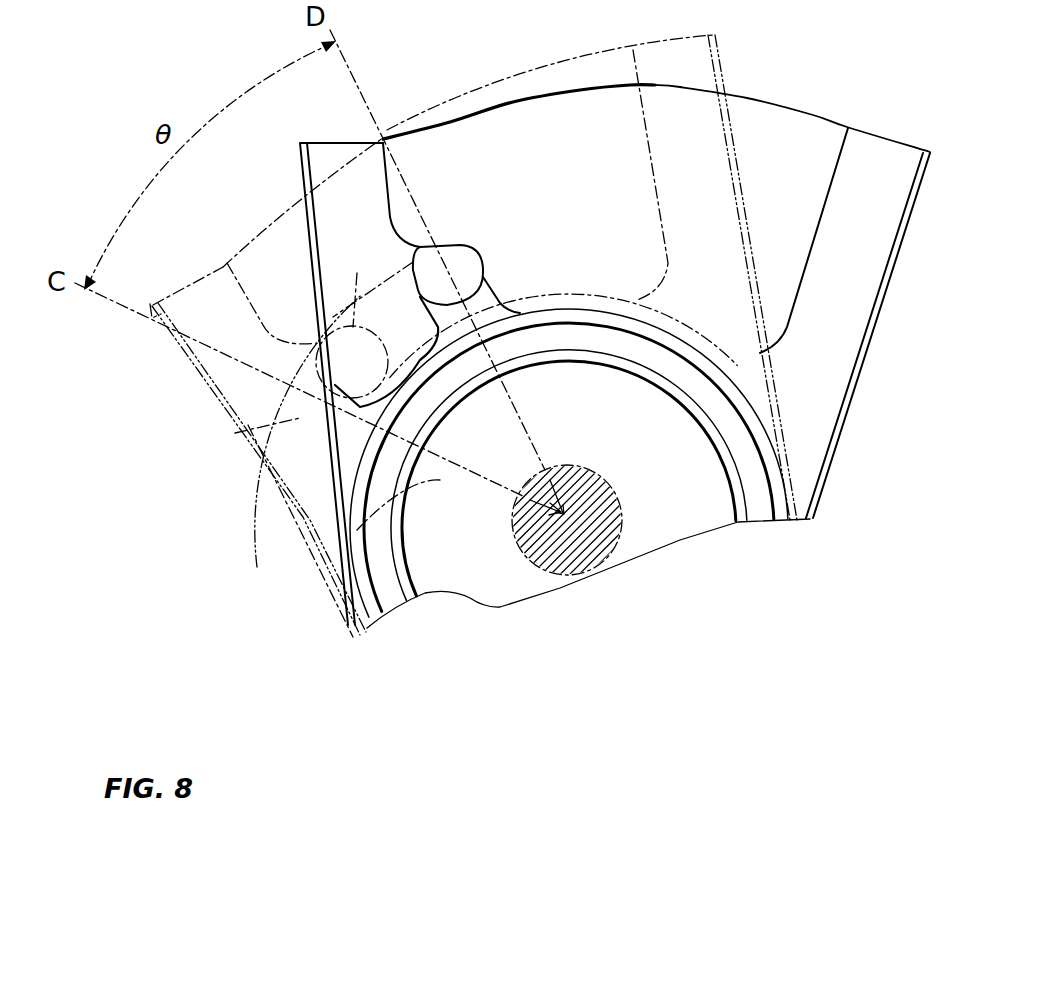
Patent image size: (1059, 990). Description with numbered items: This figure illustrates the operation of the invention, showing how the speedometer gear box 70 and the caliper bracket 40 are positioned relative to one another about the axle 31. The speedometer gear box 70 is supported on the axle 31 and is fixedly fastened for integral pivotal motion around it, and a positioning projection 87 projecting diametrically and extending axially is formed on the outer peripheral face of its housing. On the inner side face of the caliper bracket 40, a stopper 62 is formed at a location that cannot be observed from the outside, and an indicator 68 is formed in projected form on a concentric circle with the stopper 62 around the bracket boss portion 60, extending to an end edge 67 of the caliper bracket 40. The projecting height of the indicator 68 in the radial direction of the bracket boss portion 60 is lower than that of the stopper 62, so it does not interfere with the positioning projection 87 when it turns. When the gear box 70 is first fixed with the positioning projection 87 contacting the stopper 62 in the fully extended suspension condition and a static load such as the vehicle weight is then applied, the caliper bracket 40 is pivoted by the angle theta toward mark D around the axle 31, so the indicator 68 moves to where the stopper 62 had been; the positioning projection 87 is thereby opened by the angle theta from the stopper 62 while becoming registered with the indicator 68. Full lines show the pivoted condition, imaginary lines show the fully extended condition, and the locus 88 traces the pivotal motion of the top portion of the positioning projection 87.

The caliper bracket 40 is at (298, 177).
The stopper 62 is at (420, 285).
The end edge 67 is at (318, 297).
The bracket boss portion 60 is at (568, 310).
The speedometer gear box 70 is at (624, 284).
The indicator 68 is at (408, 462).
The positioning projection 87 is at (263, 420).
The locus of pivotal motion 88 is at (250, 521).
The axle 31 is at (612, 560).